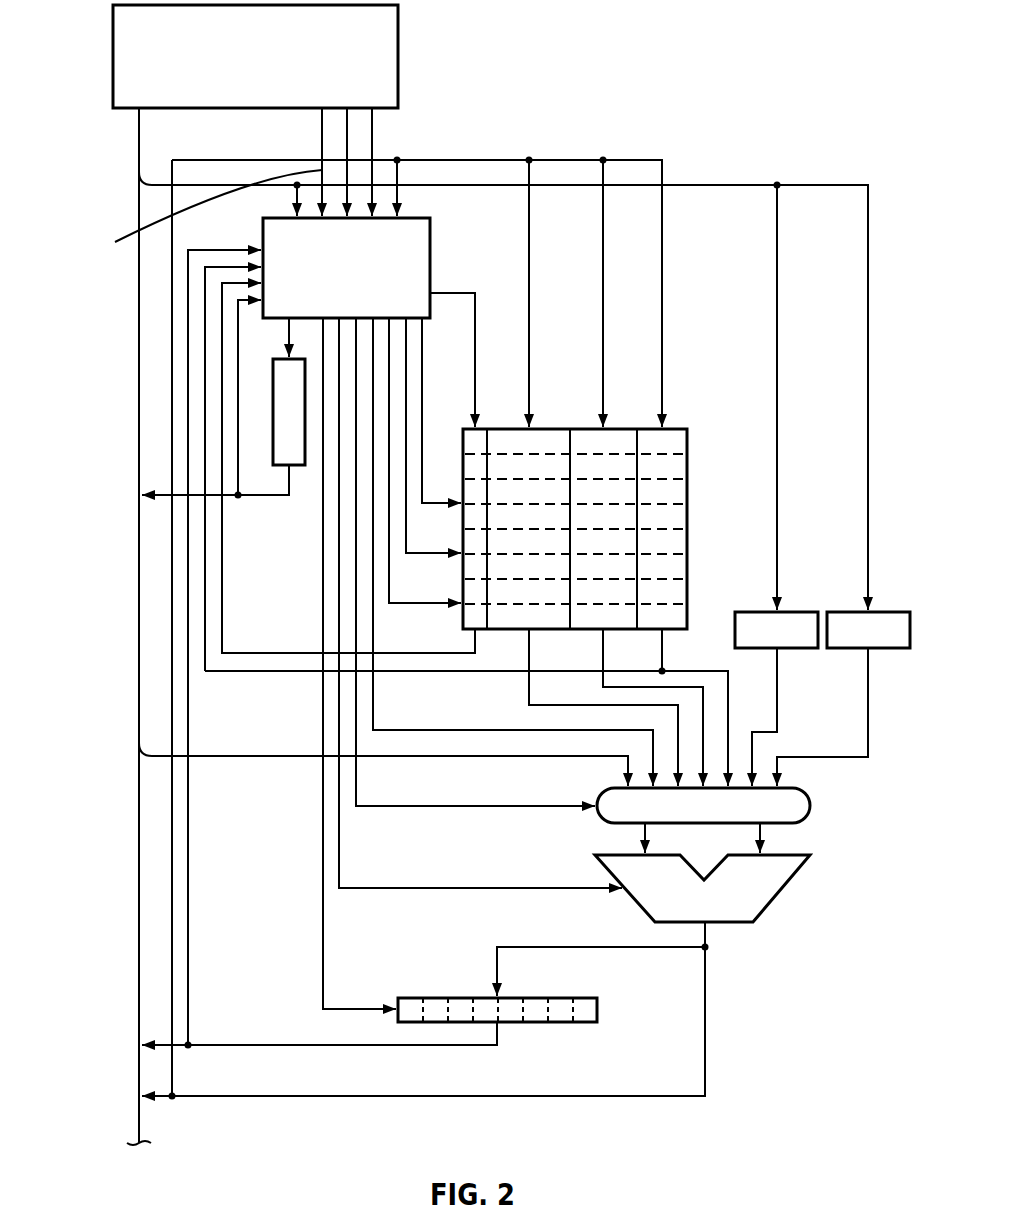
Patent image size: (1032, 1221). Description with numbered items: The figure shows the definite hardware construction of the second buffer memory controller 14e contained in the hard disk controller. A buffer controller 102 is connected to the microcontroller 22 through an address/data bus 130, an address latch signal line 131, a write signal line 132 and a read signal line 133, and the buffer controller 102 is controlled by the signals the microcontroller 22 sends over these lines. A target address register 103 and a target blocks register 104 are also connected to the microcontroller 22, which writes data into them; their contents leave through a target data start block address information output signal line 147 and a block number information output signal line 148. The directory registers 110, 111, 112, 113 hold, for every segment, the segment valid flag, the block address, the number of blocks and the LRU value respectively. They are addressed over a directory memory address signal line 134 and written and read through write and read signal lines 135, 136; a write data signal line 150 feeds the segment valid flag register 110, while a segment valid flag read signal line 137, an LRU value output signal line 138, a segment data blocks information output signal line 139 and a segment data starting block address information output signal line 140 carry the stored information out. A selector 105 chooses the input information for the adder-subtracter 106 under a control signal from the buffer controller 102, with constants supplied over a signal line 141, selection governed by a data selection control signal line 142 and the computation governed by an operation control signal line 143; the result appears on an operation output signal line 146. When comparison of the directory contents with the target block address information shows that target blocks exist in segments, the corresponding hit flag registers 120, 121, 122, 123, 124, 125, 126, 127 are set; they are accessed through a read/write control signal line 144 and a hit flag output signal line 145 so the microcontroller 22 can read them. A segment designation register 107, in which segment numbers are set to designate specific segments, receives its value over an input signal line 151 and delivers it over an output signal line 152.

The microcontroller 22 is at (388, 22).
The second buffer memory controller 14e is at (586, 60).
The buffer controller 102 is at (427, 257).
The target address register 103 is at (803, 610).
The target blocks register 104 is at (885, 610).
The selector 105 is at (810, 799).
The adder-subtracter 106 is at (780, 880).
The segment designation register 107 is at (298, 468).
The directory register 110 is at (483, 427).
The directory register 111 is at (552, 427).
The directory register 112 is at (618, 427).
The directory register 113 is at (678, 427).
The hit flag register 120 is at (410, 997).
The hit flag register 121 is at (433, 1022).
The hit flag register 122 is at (462, 997).
The hit flag register 123 is at (485, 997).
The hit flag register 124 is at (517, 997).
The hit flag register 125 is at (535, 1025).
The hit flag register 126 is at (562, 997).
The hit flag register 127 is at (587, 1025).
The address/data bus 130 is at (137, 140).
The address latch signal line 131 is at (182, 263).
The write signal line 132 is at (348, 135).
The read signal line 133 is at (373, 152).
The directory memory address signal line 134 is at (423, 384).
The write signal line 135 is at (423, 556).
The read signal line 136 is at (415, 607).
The segment valid flag read signal line 137 is at (478, 645).
The LRU value output signal line 138 is at (665, 660).
The segment data blocks information output signal line 139 is at (607, 660).
The segment data starting block address information output signal line 140 is at (532, 660).
The constant input signal line 141 is at (420, 730).
The data selection control signal line 142 is at (423, 812).
The operation control signal line 143 is at (458, 886).
The read/write control signal line 144 is at (322, 955).
The hit flag output signal line 145 is at (247, 1043).
The operation output signal line 146 is at (707, 1032).
The target data start block address information output signal line 147 is at (778, 692).
The block number information output signal line 148 is at (867, 741).
The write data signal line 150 is at (478, 333).
The input signal line 151 is at (287, 338).
The output signal line 152 is at (260, 497).